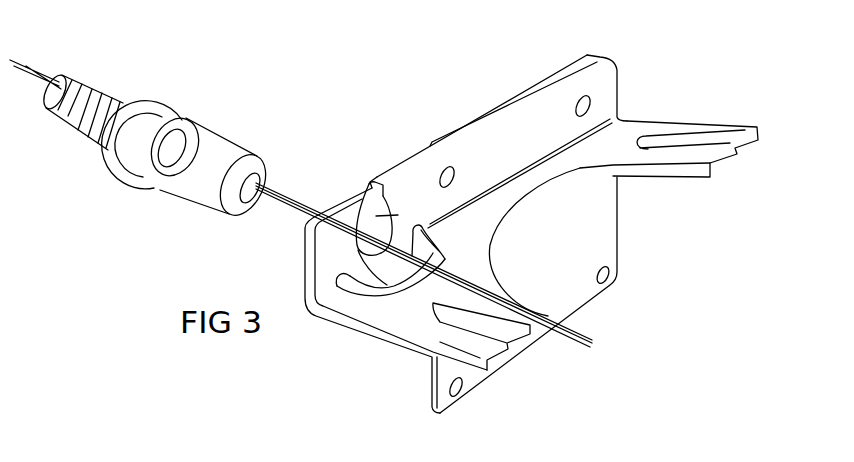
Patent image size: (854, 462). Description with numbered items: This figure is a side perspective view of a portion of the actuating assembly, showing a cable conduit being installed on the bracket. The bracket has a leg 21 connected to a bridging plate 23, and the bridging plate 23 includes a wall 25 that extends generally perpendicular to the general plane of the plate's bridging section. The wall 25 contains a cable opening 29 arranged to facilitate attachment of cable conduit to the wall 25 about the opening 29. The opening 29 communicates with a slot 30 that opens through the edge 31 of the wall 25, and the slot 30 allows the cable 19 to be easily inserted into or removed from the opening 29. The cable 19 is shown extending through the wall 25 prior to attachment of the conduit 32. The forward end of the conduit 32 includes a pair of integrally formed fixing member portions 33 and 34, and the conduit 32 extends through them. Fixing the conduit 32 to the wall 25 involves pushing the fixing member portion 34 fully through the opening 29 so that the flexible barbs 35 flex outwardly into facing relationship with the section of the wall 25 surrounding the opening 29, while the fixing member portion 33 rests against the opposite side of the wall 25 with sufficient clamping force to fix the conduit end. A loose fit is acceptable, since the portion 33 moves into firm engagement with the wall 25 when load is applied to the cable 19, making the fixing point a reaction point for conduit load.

The cable 19 is at (580, 306).
The leg 21 is at (593, 215).
The bridging plate 23 is at (687, 130).
The wall 25 is at (600, 82).
The cable opening 29 is at (380, 216).
The slot 30 is at (370, 187).
The edge 31 is at (538, 91).
The conduit 32 is at (79, 93).
The fixing member portion 33 is at (131, 112).
The fixing member portion 34 is at (240, 143).
The flexible barb 35 is at (198, 132).